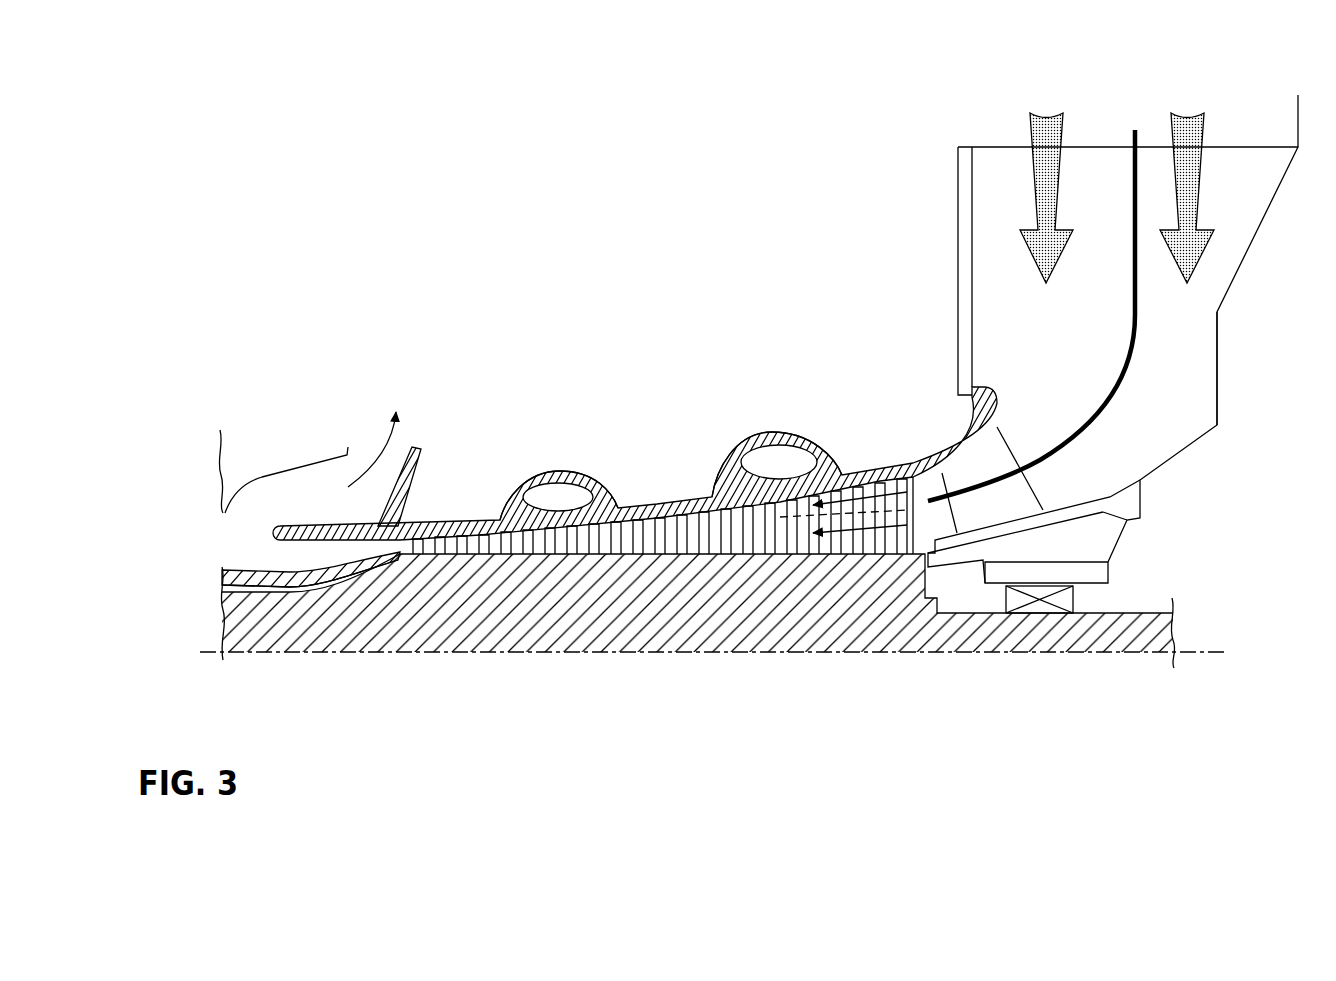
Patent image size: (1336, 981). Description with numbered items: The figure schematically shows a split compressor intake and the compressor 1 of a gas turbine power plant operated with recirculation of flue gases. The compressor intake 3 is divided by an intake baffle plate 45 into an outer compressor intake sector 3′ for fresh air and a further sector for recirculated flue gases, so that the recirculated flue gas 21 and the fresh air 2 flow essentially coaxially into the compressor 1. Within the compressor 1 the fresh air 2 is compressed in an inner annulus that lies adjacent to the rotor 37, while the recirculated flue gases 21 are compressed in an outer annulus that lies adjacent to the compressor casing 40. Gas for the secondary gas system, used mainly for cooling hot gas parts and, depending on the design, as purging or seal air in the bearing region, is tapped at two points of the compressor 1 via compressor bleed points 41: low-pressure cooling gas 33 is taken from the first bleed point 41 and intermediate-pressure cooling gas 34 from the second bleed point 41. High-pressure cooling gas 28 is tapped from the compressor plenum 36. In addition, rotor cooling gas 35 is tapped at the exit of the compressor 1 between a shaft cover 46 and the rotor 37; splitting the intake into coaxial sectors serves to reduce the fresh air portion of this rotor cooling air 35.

The compressor 1 is at (643, 255).
The fresh air 2 is at (875, 525).
The compressor intake 3 is at (1233, 292).
The outer compressor intake sector 3′ is at (1172, 378).
The recirculated flue gas 21 is at (827, 500).
The high-pressure cooling gas 28 is at (381, 430).
The low-pressure cooling gas 33 is at (755, 470).
The intermediate-pressure cooling gas 34 is at (542, 497).
The rotor cooling gas 35 is at (333, 581).
The compressor plenum 36 is at (320, 478).
The rotor 37 is at (708, 608).
The compressor casing 40 is at (873, 477).
The compressor bleed points 41 is at (567, 492).
The intake baffle plate 45 is at (1134, 127).
The shaft cover 46 is at (257, 578).